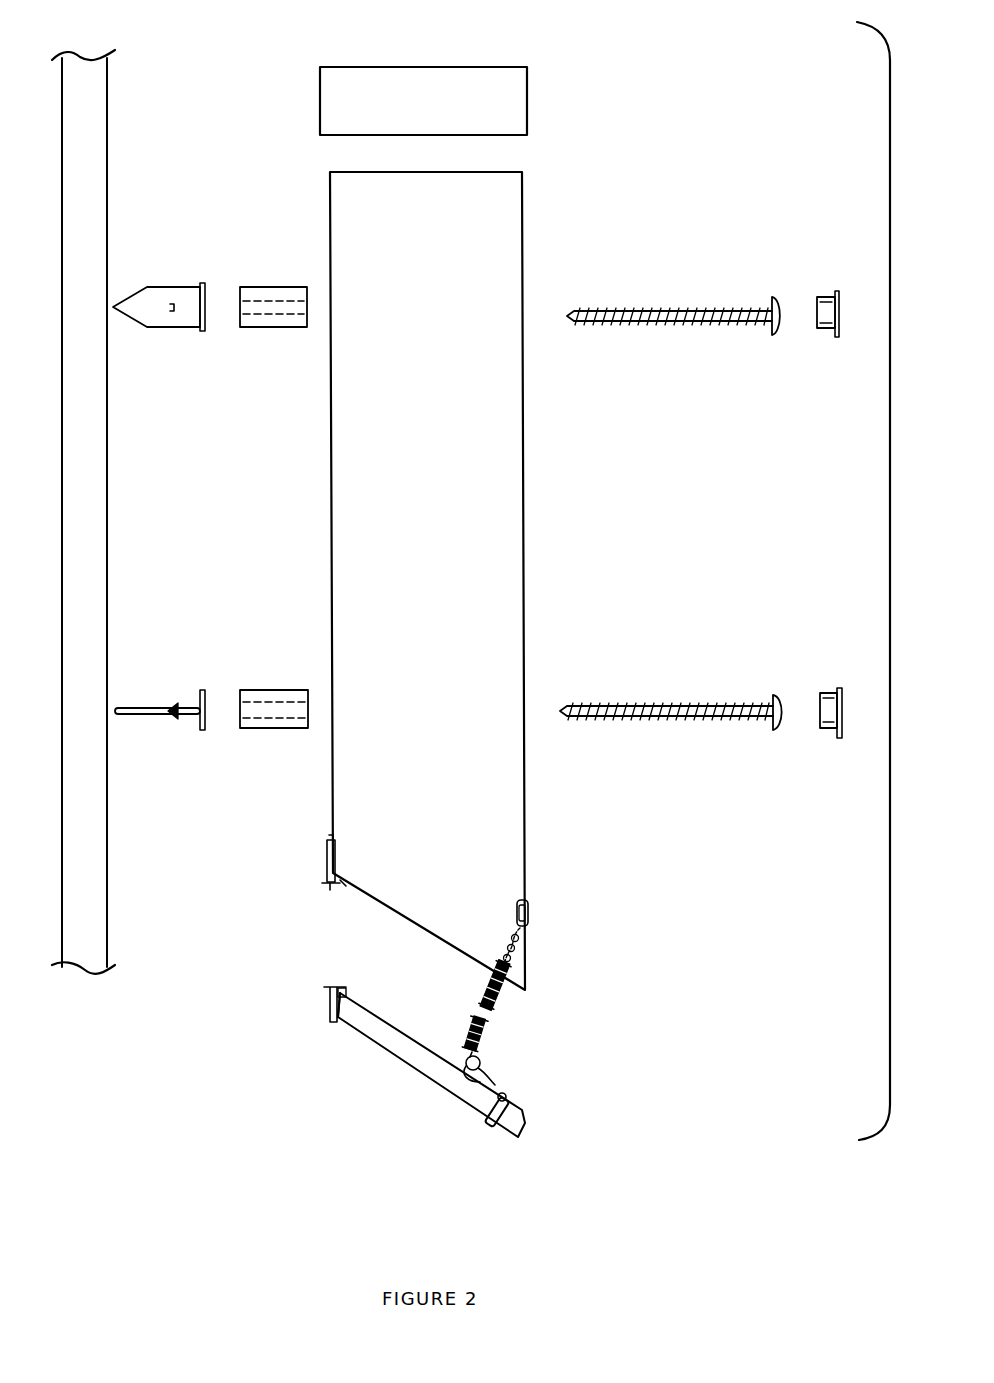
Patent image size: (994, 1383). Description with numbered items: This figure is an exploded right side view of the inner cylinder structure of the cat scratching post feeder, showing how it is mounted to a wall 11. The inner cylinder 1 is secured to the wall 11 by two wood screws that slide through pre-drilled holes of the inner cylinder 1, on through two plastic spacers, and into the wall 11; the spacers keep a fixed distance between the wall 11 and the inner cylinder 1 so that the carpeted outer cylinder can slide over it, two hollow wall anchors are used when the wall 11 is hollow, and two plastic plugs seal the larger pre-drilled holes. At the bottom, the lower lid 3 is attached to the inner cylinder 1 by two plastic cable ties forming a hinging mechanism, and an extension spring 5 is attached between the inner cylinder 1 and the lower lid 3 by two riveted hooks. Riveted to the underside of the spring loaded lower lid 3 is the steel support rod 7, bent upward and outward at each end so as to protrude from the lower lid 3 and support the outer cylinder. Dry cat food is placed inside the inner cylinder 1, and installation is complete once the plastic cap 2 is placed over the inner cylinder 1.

The inner cylinder 1 is at (527, 190).
The plastic cap 2 is at (463, 62).
The lower lid 3 is at (387, 1060).
The extension spring 5 is at (490, 1033).
The steel support rod 7 is at (492, 1130).
The wall 11 is at (110, 117).